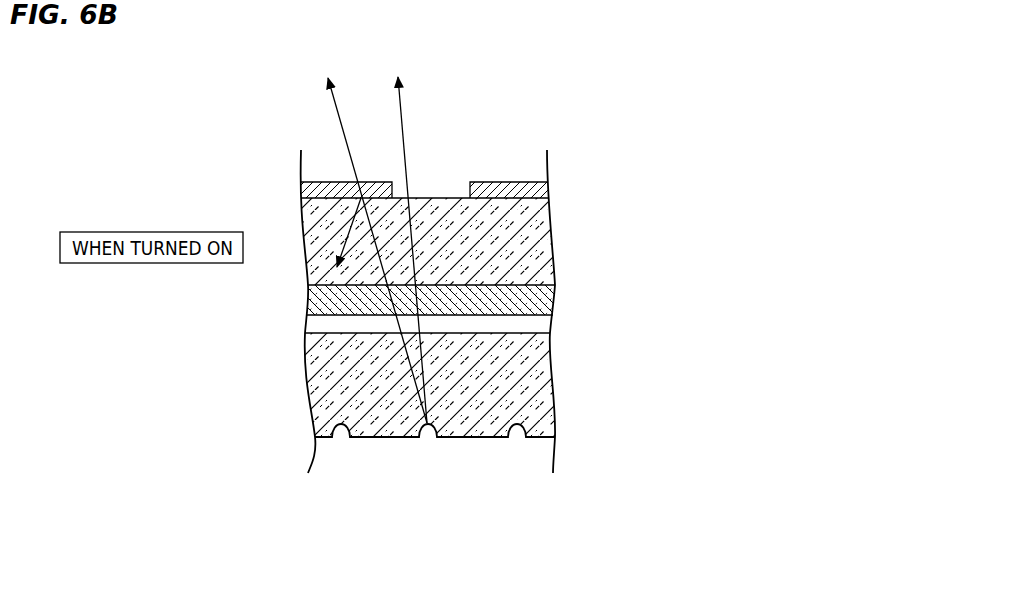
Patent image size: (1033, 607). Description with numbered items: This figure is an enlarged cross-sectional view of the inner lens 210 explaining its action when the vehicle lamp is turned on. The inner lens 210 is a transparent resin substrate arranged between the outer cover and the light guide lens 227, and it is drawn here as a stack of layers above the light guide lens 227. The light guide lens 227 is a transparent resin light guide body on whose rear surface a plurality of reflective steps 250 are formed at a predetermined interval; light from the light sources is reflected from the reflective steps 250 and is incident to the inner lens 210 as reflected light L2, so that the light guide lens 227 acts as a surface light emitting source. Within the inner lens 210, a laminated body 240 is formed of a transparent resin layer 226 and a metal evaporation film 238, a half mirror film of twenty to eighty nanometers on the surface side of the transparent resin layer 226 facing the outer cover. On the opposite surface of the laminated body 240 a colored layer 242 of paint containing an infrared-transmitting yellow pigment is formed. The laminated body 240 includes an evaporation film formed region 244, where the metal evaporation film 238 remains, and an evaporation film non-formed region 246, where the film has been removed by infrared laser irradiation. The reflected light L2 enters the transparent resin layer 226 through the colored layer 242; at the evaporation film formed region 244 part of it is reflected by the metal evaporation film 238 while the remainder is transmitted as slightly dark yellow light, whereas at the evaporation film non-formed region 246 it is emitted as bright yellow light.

The inner lens 210 is at (537, 129).
The evaporation film formed region 244 is at (323, 180).
The evaporation film non-formed region 246 is at (457, 184).
The metal evaporation film 238 is at (549, 190).
The transparent resin layer 226 is at (554, 255).
The laminated body 240 is at (529, 234).
The colored layer 242 is at (553, 300).
The light guide lens 227 is at (552, 375).
The reflective steps 250 is at (340, 428).
The reflected light L2 is at (357, 247).